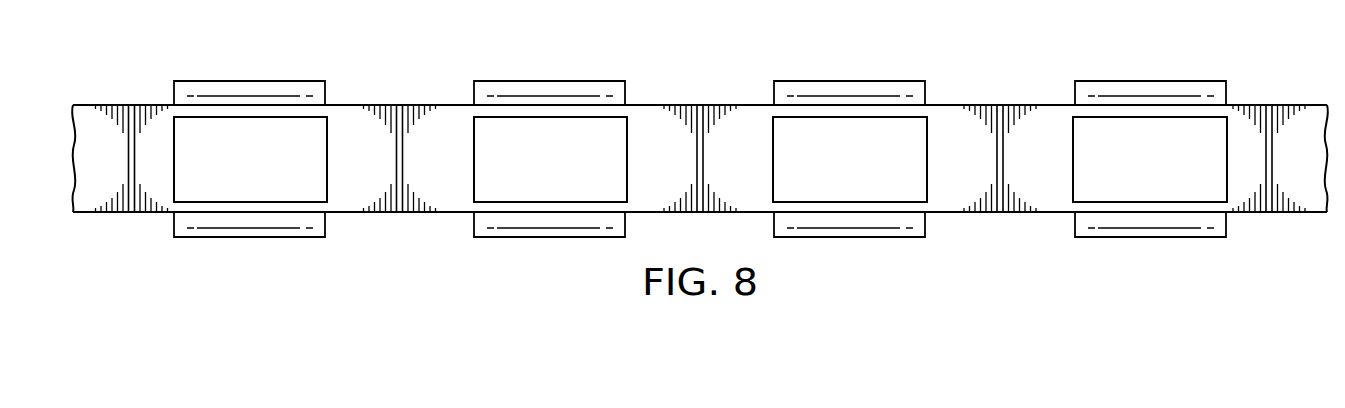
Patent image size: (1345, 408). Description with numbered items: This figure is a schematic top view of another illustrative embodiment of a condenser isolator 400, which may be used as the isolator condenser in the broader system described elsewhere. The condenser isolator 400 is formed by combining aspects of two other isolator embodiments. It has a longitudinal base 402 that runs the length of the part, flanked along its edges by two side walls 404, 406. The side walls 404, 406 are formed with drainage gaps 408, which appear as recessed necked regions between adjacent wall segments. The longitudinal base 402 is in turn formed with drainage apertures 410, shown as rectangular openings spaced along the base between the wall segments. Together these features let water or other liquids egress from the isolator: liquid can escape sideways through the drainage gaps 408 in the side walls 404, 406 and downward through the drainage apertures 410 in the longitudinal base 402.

The condenser isolator 400 is at (393, 105).
The longitudinal base 402 is at (453, 202).
The side wall 404 is at (250, 81).
The side wall 406 is at (250, 237).
The drainage gap 408 is at (1027, 78).
The drainage aperture 410 is at (845, 128).